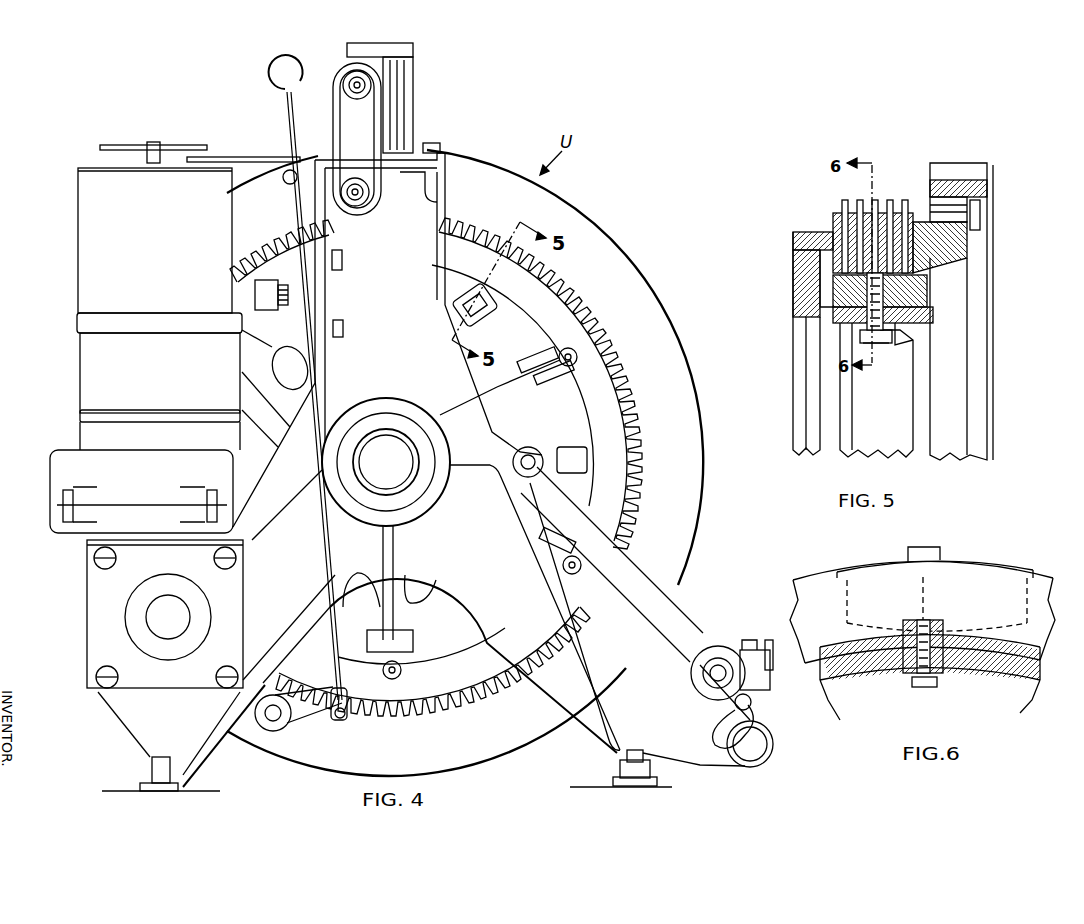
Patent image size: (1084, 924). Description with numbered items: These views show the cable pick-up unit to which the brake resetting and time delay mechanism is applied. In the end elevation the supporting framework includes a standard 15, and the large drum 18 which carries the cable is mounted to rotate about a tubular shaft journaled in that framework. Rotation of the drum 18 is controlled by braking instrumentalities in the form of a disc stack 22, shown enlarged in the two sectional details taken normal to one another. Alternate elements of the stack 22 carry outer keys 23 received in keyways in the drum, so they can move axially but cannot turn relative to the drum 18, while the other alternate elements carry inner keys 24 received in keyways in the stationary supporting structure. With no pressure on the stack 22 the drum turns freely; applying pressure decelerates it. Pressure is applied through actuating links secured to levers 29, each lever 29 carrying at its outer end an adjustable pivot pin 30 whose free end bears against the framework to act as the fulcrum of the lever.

In FIG. 4, the standard 15 is at (427, 203).
In FIG. 4, the drum 18 is at (608, 242).
In FIG. 5, the disc stack 22 is at (834, 222).
In FIG. 6, the disc stack 22 is at (1005, 580).
In FIG. 5, the outer keys 23 is at (892, 200).
In FIG. 6, the outer keys 23 is at (924, 552).
In FIG. 5, the inner keys 24 is at (790, 312).
In FIG. 6, the inner keys 24 is at (1030, 645).
In FIG. 4, the lever 29 is at (521, 384).
In FIG. 4, the adjustable pivot pin 30 is at (568, 348).